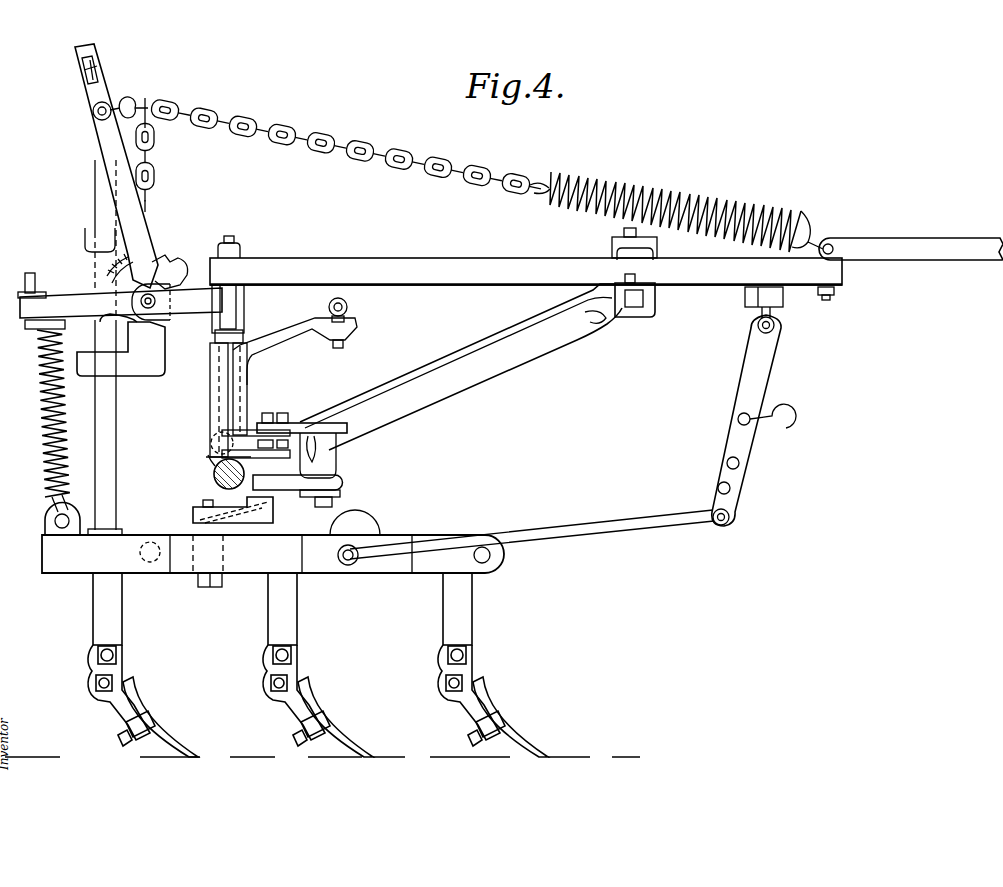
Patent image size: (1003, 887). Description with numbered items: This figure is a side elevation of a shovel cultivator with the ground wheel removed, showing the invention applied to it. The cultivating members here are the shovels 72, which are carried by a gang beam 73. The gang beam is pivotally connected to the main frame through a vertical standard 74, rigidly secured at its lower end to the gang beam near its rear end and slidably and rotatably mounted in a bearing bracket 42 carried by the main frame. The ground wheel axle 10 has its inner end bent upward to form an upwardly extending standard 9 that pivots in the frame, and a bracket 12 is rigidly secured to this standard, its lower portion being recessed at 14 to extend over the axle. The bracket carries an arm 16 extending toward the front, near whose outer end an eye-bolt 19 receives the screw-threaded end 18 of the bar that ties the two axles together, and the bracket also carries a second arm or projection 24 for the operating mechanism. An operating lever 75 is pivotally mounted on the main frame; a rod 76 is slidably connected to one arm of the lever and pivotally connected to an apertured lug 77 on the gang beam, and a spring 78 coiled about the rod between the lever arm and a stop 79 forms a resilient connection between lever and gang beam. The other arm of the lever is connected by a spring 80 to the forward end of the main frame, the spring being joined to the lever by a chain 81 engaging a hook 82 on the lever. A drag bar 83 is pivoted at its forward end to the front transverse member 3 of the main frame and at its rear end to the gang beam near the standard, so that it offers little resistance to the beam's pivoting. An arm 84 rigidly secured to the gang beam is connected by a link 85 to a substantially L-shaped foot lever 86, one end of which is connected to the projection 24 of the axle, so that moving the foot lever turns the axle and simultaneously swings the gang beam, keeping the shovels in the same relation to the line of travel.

The front transverse member 3 is at (656, 300).
The upwardly extending standard 9 is at (240, 340).
The axle 10 is at (213, 480).
The bracket 12 is at (211, 387).
The recess 14 is at (213, 478).
The arm 16 is at (295, 345).
The screw-threaded end 18 is at (327, 310).
The eye-bolt 19 is at (350, 313).
The arm or projection 24 is at (250, 452).
The bearing bracket 42 is at (153, 354).
The shovels 72 is at (142, 705).
The gang beam 73 is at (208, 556).
The vertical standard 74 is at (115, 437).
The operating lever 75 is at (103, 139).
The rod 76 is at (35, 277).
The apertured lug 77 is at (48, 518).
The spring 78 is at (40, 419).
The stop 79 is at (48, 500).
The spring 80 is at (712, 207).
The chain 81 is at (328, 140).
The hook 82 is at (126, 100).
The drag bar 83 is at (447, 401).
The arm 84 is at (196, 512).
The link 85 is at (340, 484).
The foot lever 86 is at (300, 426).